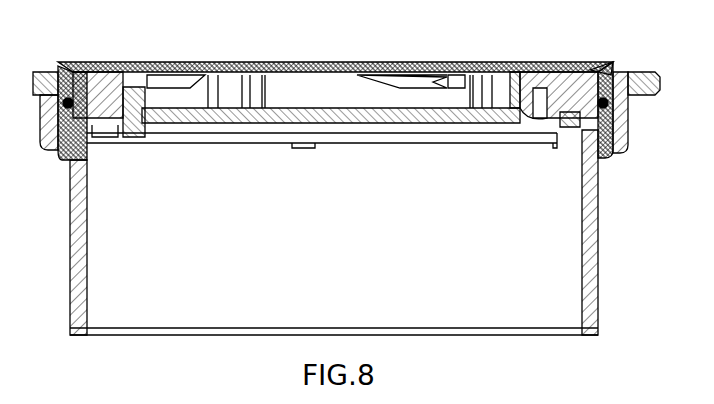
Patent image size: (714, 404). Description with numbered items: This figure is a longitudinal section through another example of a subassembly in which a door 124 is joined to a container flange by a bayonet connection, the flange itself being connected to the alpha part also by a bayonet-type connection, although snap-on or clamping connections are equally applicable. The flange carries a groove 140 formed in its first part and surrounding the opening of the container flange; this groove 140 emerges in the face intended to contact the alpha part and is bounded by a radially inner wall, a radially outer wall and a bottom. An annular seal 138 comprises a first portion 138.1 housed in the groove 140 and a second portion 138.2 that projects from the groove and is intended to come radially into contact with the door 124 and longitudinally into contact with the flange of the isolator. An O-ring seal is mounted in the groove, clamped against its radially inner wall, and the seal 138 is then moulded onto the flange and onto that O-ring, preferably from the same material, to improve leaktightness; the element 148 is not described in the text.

The door 124 is at (200, 118).
The seal 138 is at (619, 62).
The first portion of the seal 138.1 is at (580, 148).
The second portion of the seal 138.2 is at (609, 63).
The groove 140 is at (628, 138).
The flange 148 is at (628, 108).